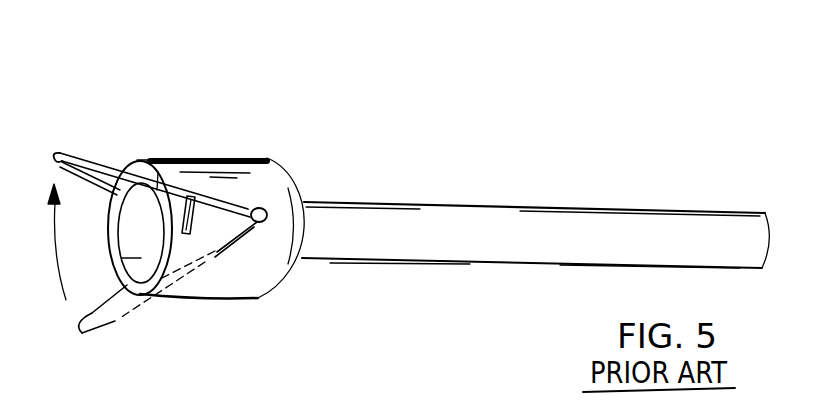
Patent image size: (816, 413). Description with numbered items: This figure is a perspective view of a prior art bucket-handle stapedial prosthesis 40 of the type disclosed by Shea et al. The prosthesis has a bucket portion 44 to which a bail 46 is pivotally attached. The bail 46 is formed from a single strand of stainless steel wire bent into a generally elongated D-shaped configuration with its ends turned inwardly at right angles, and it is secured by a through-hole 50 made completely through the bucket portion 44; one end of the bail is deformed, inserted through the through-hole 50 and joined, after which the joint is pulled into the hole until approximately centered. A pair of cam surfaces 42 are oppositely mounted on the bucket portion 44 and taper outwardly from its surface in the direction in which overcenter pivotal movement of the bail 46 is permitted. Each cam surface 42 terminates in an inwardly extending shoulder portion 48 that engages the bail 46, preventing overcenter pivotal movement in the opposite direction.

The stapedial prosthesis 40 is at (389, 133).
The cam surface 42 is at (188, 236).
The bucket portion 44 is at (235, 190).
The bail 46 is at (71, 150).
The shoulder portion 48 is at (197, 157).
The through-hole 50 is at (261, 207).